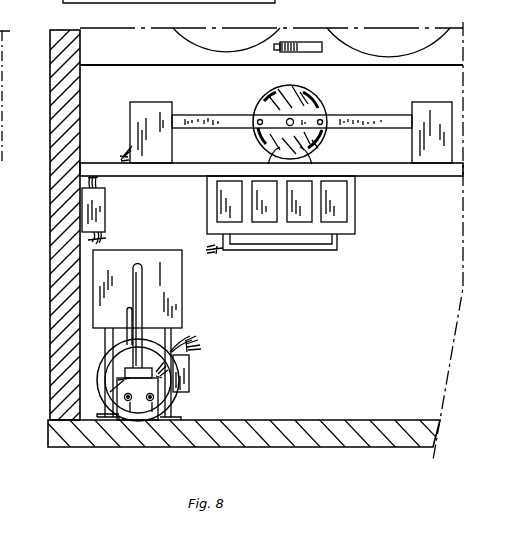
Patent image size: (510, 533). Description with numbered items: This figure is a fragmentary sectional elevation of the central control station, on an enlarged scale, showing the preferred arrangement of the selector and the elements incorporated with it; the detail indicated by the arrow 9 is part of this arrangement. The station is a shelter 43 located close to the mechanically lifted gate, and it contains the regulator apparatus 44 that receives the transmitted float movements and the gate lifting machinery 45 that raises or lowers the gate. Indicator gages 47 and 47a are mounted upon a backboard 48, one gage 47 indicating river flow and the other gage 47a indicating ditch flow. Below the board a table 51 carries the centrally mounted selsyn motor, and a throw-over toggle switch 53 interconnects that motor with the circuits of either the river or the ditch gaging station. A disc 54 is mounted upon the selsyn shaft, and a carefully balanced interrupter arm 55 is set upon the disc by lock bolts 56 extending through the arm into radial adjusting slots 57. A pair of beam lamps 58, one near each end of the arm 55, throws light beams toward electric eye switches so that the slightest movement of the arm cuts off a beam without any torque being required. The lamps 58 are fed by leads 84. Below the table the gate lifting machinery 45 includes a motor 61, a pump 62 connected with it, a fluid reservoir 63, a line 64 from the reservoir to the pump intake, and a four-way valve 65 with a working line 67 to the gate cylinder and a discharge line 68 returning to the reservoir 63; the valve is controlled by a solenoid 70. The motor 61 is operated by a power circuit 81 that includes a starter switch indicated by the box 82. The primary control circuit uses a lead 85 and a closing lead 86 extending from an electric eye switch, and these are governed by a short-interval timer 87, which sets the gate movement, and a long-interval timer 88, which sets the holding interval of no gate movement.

The detail view arrow 9 is at (276, 328).
The shelter 43 is at (52, 92).
The regulator apparatus 44 is at (362, 25).
The gate lifting machinery 45 is at (232, 367).
The indicator gage 47 is at (226, 40).
The indicator gage 47a is at (388, 42).
The backboard 48 is at (271, 55).
The table 51 is at (424, 172).
The throw-over toggle switch 53 is at (300, 46).
The disc 54 is at (306, 98).
The interrupter arm 55 is at (218, 115).
The lock bolts 56 is at (323, 119).
The radial adjusting slots 57 is at (318, 140).
The beam lamps 58 is at (291, 132).
The motor 61 is at (186, 340).
The pump 62 is at (172, 378).
The fluid reservoir 63 is at (180, 278).
The line 64 is at (127, 318).
The four-way valve 65 is at (148, 410).
The working line 67 is at (154, 397).
The discharge line 68 is at (133, 280).
The solenoid 70 is at (125, 380).
The power circuit 81 is at (106, 238).
The starter switch 82 is at (105, 208).
The leads 84 is at (122, 152).
The lead 85 is at (208, 249).
The closing lead 86 is at (216, 252).
The short-interval timer 87 is at (228, 196).
The long-interval timer 88 is at (298, 224).